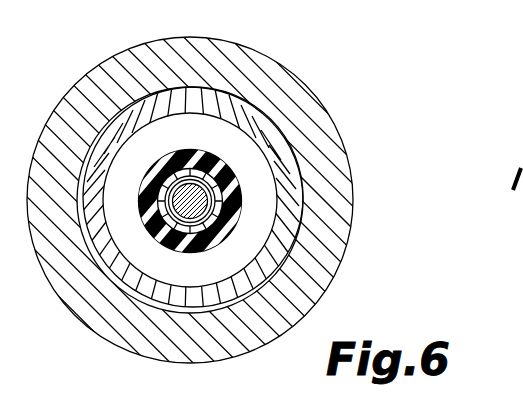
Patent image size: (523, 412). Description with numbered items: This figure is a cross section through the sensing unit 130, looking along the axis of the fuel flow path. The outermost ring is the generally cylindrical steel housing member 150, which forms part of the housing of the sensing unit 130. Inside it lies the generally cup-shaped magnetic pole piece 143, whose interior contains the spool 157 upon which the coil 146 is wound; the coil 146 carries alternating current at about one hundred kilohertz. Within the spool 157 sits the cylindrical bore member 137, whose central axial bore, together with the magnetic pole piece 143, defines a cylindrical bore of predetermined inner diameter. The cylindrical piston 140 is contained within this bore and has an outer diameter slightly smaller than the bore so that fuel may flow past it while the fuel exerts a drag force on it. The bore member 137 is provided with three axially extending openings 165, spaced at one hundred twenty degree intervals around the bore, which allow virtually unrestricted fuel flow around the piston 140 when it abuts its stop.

The sensing unit 130 is at (91, 66).
The housing member 150 is at (157, 70).
The magnetic pole piece 143 is at (283, 248).
The coil 146 is at (247, 158).
The spool 157 is at (221, 195).
The bore member 137 is at (206, 180).
The axially extending openings 165 is at (164, 190).
The piston 140 is at (192, 210).